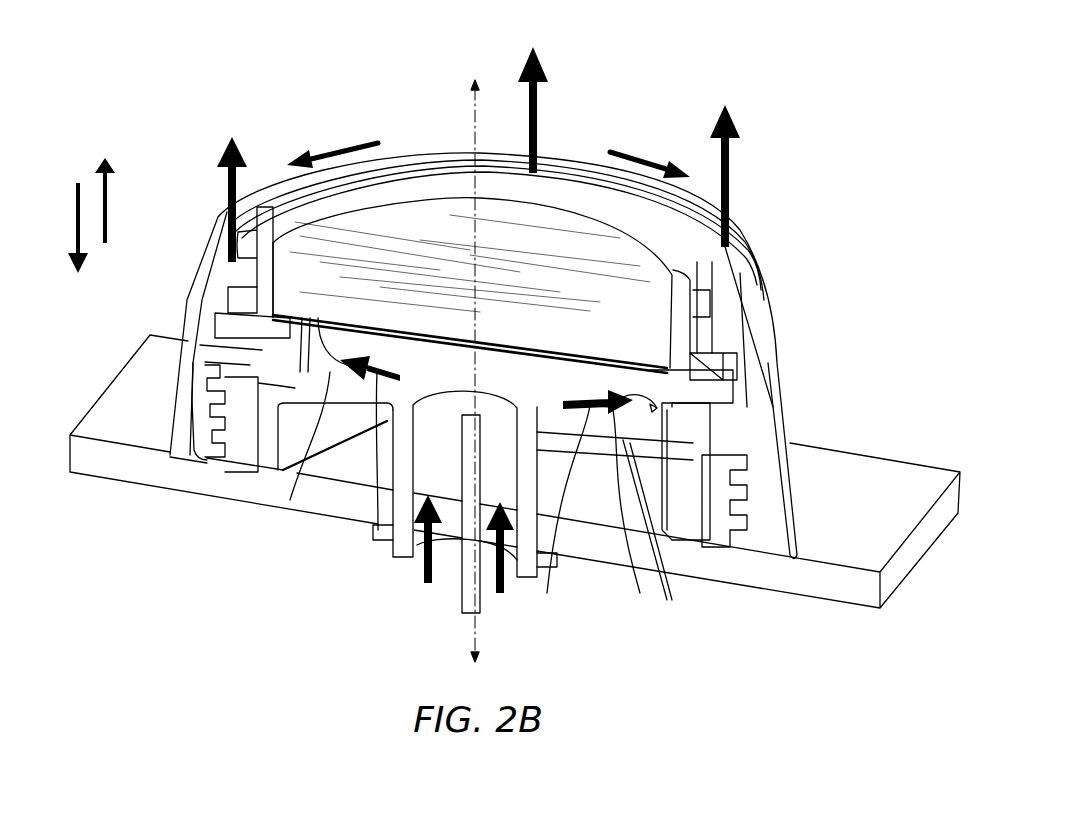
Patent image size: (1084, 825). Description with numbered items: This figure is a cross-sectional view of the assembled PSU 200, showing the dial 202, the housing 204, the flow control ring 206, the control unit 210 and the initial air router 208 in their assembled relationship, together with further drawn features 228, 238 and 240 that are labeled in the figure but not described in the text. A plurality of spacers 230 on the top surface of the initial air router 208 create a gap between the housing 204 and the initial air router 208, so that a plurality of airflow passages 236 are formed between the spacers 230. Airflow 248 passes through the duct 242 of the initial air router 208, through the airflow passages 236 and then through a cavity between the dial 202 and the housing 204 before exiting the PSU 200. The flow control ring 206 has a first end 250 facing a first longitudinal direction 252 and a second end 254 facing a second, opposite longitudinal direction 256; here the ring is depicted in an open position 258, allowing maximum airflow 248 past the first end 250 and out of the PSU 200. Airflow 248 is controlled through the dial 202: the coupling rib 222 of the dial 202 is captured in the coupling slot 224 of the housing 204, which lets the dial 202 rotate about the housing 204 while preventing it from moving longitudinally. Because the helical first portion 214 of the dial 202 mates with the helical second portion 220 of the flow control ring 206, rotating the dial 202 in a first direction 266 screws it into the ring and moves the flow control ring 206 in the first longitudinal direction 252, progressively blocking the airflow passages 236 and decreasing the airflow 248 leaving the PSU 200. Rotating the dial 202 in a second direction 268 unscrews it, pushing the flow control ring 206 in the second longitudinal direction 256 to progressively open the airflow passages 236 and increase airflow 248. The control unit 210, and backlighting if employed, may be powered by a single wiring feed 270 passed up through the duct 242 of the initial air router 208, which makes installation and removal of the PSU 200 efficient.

The PSU 200 is at (206, 68).
The dial 202 is at (767, 307).
The housing 204 is at (733, 338).
The flow control ring 206 is at (242, 448).
The initial air router 208 is at (637, 530).
The control unit 210 is at (430, 205).
The helical first portion 214 is at (188, 400).
The helical second portion 220 is at (660, 542).
The coupling rib 222 is at (254, 299).
The coupling slot 224 is at (283, 200).
The latch 228 is at (710, 256).
The spacers 230 is at (406, 212).
The airflow passages 236 is at (373, 422).
The tube leg 238 is at (373, 533).
The base plate 240 is at (848, 511).
The duct 242 is at (455, 530).
The airflow 248 is at (540, 120).
The first end 250 is at (200, 335).
The first longitudinal direction 252 is at (110, 183).
The second end 254 is at (233, 475).
The second longitudinal direction 256 is at (85, 247).
The open position 258 is at (130, 515).
The first direction 266 is at (648, 145).
The second direction 268 is at (350, 140).
The wiring feed 270 is at (482, 605).